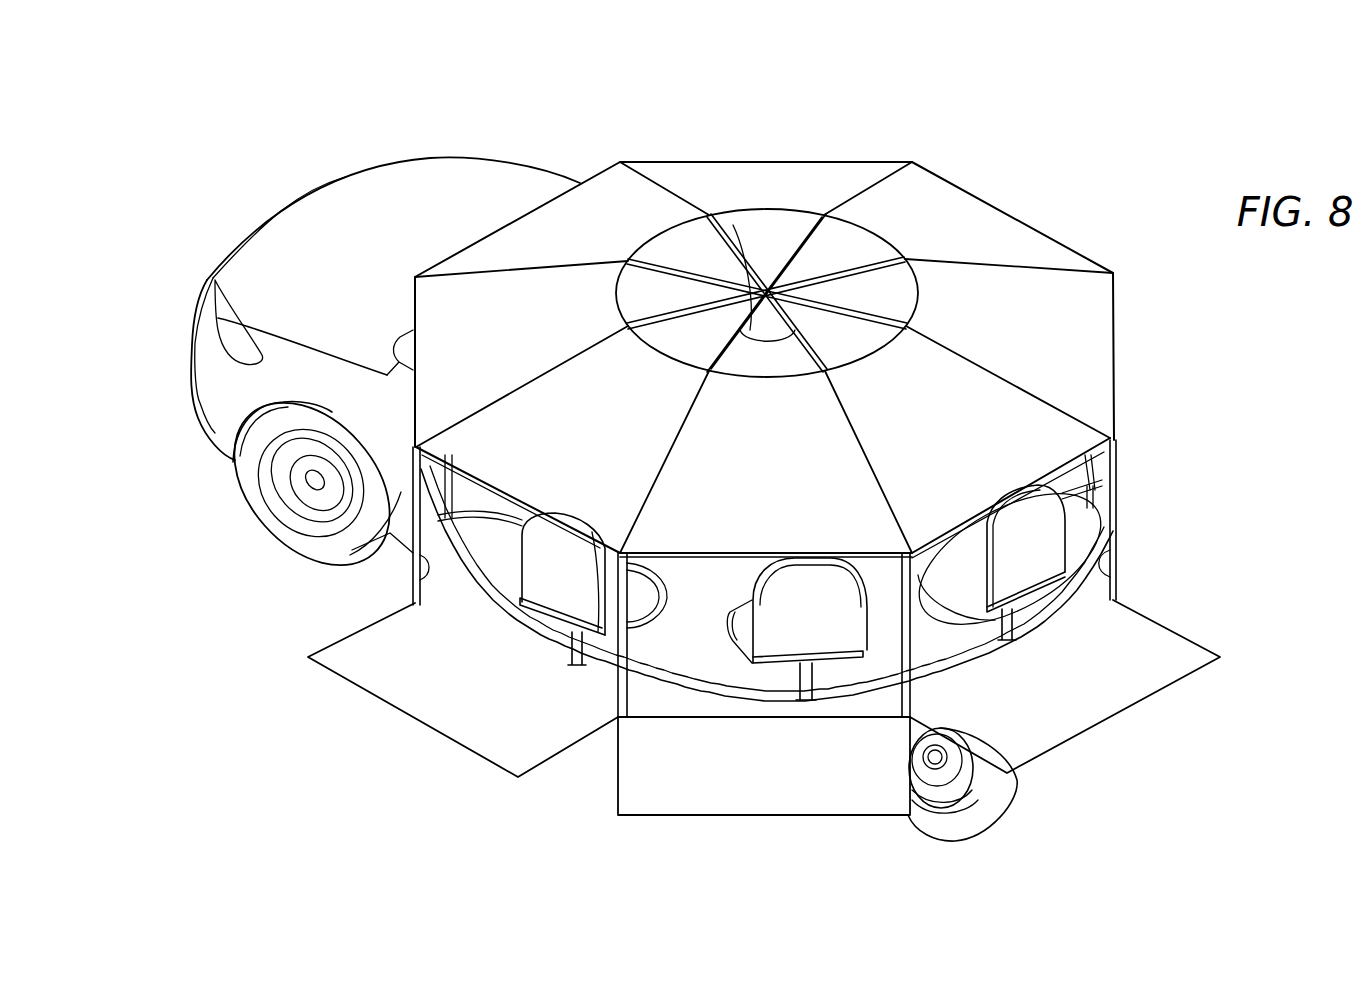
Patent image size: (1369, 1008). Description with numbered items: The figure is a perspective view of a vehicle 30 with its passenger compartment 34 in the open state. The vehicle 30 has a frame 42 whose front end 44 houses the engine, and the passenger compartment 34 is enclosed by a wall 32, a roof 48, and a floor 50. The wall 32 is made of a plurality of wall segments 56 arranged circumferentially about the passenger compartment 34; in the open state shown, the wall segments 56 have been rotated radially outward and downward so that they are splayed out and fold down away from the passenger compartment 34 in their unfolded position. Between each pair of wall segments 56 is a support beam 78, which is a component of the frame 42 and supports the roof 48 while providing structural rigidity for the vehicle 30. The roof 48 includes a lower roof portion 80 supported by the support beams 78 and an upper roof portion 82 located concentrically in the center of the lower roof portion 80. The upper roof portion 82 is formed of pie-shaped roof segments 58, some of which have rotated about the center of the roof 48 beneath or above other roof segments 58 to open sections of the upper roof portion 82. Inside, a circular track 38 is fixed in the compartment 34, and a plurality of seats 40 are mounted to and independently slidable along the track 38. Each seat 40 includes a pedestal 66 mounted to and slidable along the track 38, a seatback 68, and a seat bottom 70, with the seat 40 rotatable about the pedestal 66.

The vehicle 30 is at (220, 148).
The wall 32 is at (348, 632).
The passenger compartment 34 is at (965, 178).
The circular track 38 is at (668, 688).
The seat 40 is at (753, 222).
The frame 42 is at (407, 567).
The front end 44 is at (345, 178).
The roof 48 is at (288, 360).
The floor 50 is at (697, 635).
The wall segments 56 is at (1190, 642).
The roof segments 58 is at (518, 238).
The pedestal 66 is at (1087, 502).
The seatback 68 is at (785, 227).
The seat bottom 70 is at (705, 569).
The support beam 78 is at (1113, 572).
The lower roof portion 80 is at (1117, 327).
The upper roof portion 82 is at (920, 280).